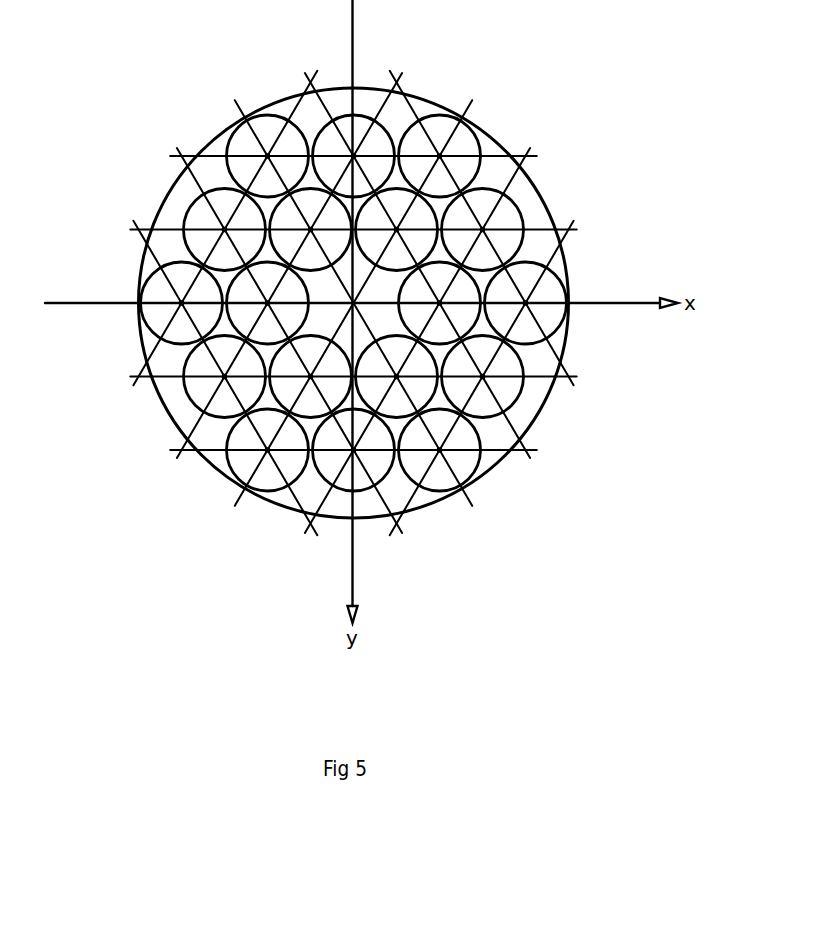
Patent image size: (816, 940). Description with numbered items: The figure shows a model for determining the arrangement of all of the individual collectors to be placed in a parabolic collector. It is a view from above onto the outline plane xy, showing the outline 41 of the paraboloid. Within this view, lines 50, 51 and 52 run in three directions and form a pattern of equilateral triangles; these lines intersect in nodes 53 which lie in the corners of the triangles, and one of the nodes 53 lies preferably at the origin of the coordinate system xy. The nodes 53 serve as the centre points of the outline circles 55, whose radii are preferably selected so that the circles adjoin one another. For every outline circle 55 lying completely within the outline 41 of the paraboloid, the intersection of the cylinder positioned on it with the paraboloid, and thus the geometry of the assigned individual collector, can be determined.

The outline 41 is at (436, 303).
The lines 50 is at (377, 295).
The lines 51 is at (377, 303).
The lines 52 is at (377, 303).
The nodes 53 is at (455, 299).
The outline circles 55 is at (377, 268).